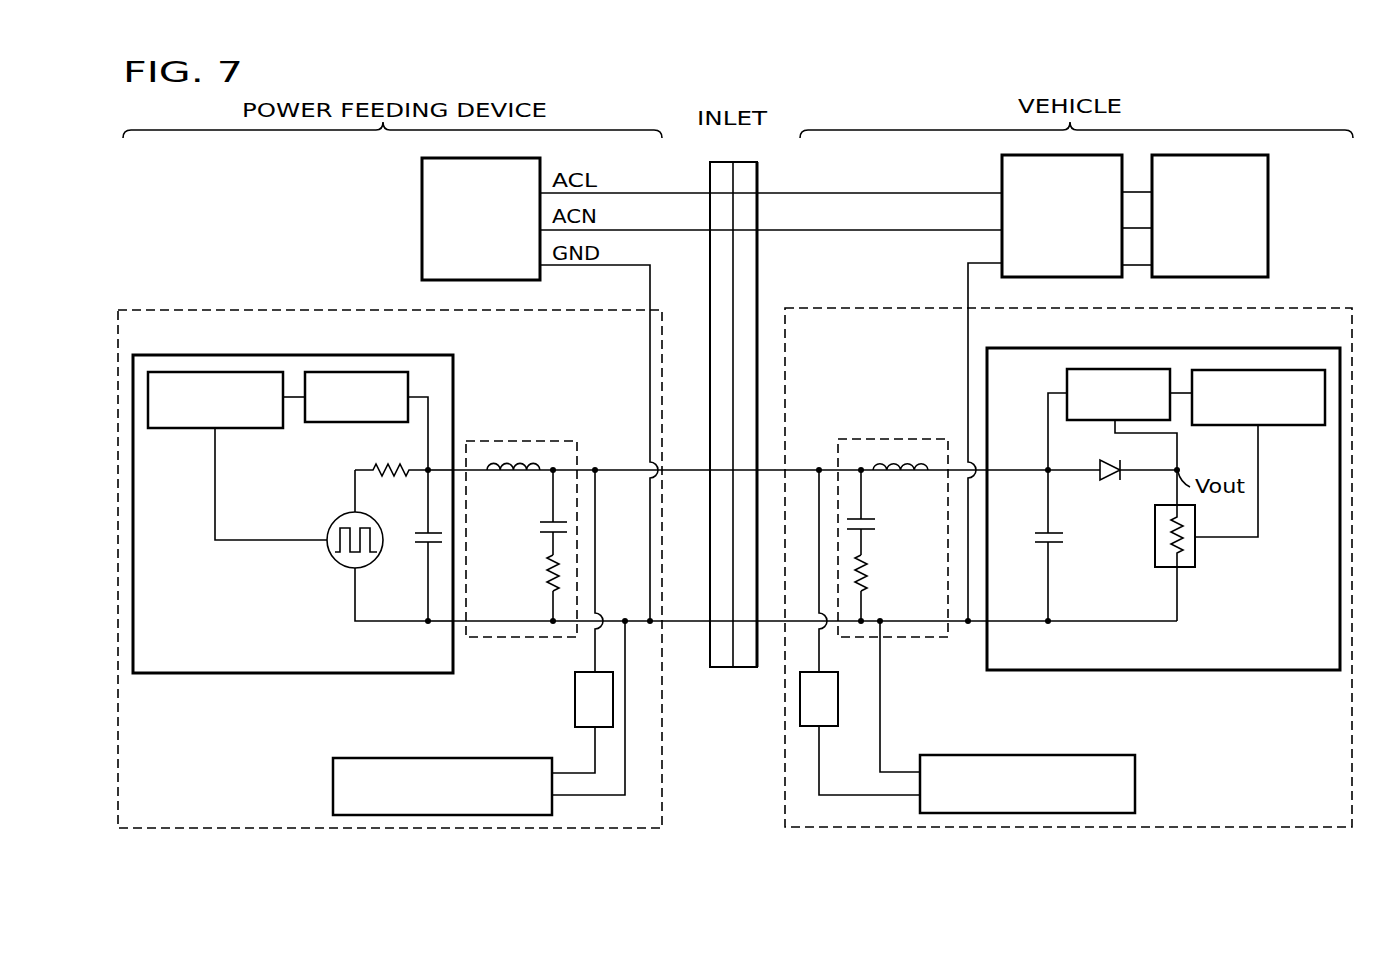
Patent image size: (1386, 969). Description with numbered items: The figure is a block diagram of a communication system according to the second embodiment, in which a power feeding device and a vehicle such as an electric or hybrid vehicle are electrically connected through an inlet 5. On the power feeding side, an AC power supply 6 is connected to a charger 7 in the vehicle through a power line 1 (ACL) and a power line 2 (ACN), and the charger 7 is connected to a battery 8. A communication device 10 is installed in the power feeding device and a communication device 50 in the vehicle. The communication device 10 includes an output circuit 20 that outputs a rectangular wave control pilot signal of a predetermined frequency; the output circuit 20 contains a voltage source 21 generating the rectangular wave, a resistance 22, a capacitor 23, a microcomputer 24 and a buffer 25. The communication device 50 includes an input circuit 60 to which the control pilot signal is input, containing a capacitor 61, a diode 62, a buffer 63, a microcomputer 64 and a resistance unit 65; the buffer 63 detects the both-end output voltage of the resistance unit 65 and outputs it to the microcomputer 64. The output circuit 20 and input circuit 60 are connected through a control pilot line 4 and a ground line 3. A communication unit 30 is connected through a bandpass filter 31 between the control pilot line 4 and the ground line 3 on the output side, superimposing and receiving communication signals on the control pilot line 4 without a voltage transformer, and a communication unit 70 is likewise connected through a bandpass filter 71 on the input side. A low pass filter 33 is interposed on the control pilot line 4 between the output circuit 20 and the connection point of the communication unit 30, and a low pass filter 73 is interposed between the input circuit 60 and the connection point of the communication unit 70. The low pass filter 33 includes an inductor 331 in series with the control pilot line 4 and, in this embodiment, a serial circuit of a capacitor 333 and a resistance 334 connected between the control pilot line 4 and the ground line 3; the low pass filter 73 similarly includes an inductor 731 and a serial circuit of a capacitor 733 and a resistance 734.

The power line 1 is at (837, 193).
The power line 2 is at (837, 230).
The ground line 3 is at (688, 626).
The control pilot line 4 is at (688, 475).
The inlet 5 is at (722, 162).
The AC power supply 6 is at (422, 190).
The charger 7 is at (1002, 175).
The battery 8 is at (1268, 190).
The communication device 10 is at (231, 310).
The output circuit 20 is at (390, 675).
The voltage source 21 is at (338, 566).
The resistance 22 is at (392, 478).
The capacitor 23 is at (409, 553).
The microcomputer 24 is at (183, 428).
The buffer 25 is at (340, 422).
The communication unit 30 is at (333, 786).
The bandpass filter 31 is at (575, 700).
The low pass filter 33 is at (518, 441).
The inductor 331 is at (521, 476).
The capacitor 333 is at (538, 526).
The resistance 334 is at (540, 569).
The communication device 50 is at (1300, 308).
The input circuit 60 is at (1238, 672).
The capacitor 61 is at (1066, 538).
The diode 62 is at (1106, 484).
The buffer 63 is at (1067, 380).
The microcomputer 64 is at (1281, 428).
The resistance unit 65 is at (1196, 553).
The communication unit 70 is at (1137, 785).
The bandpass filter 71 is at (830, 727).
The low pass filter 73 is at (898, 440).
The inductor 731 is at (908, 477).
The capacitor 733 is at (878, 525).
The resistance 734 is at (870, 575).